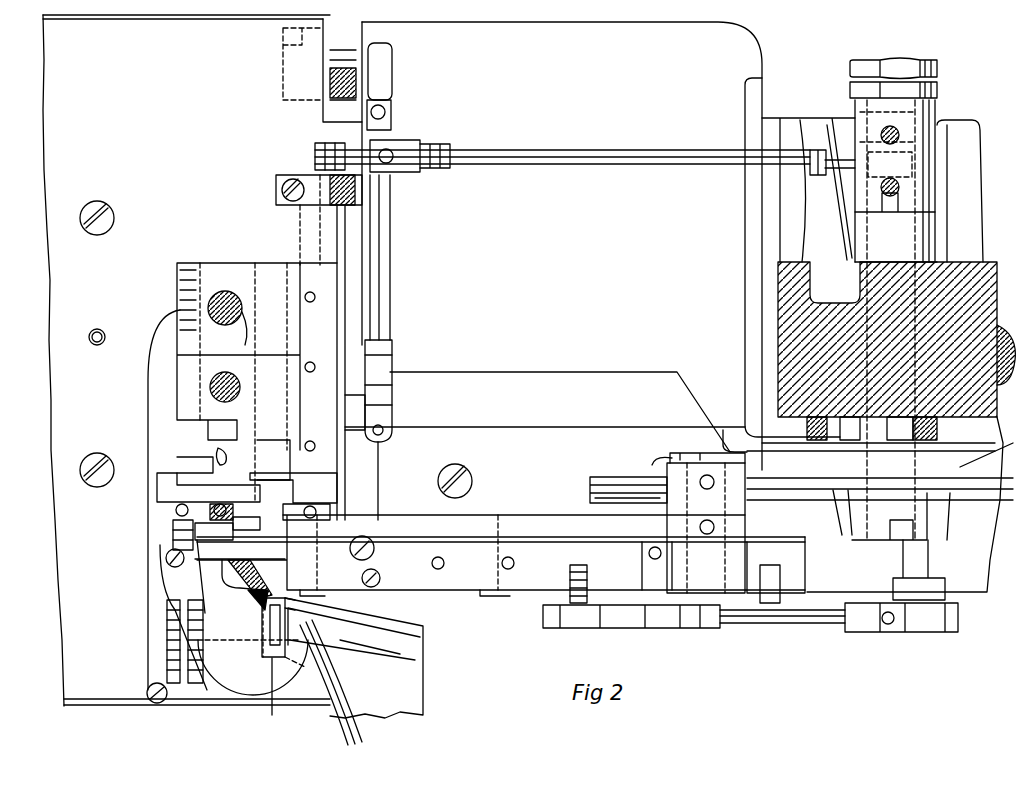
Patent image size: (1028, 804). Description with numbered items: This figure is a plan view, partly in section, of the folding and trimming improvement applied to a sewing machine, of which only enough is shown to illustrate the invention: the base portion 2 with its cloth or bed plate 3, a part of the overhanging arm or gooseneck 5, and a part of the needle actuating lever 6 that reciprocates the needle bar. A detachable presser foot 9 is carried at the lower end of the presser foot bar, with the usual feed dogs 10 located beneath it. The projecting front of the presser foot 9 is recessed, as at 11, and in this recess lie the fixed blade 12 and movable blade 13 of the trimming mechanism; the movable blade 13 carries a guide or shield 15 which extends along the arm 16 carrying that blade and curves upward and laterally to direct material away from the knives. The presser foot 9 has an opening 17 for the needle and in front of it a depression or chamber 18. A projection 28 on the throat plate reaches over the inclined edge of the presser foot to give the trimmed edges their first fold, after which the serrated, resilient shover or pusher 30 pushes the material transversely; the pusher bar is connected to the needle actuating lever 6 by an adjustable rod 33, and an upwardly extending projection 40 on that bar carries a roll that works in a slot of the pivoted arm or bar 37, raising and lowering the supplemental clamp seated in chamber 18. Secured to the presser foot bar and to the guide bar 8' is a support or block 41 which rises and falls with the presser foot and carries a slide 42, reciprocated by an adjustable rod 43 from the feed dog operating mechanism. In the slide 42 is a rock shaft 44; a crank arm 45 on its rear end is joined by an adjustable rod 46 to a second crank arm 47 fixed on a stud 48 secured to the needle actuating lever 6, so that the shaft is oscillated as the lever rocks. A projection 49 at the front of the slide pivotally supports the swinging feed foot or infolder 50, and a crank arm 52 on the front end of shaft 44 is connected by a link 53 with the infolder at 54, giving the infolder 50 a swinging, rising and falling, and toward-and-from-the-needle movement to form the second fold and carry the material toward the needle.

The base portion 2 is at (970, 587).
The cloth or bed plate 3 is at (60, 340).
The overhanging arm or gooseneck 5 is at (583, 40).
The needle actuating lever 6 is at (847, 547).
The guide bar 8' is at (229, 318).
The presser foot 9 is at (255, 710).
The feed dogs 10 is at (197, 684).
The recess 11 is at (272, 660).
The fixed blade 12 is at (268, 620).
The movable blade 13 is at (288, 608).
The guide or shield 15 is at (405, 665).
The arm 16 is at (352, 736).
The opening 17 is at (215, 457).
The depression or chamber 18 is at (180, 540).
The projection 28 is at (236, 585).
The shover or pusher 30 is at (372, 588).
The adjustable rod 33 is at (750, 618).
The pivotally supported arm or bar 37 is at (542, 556).
The upwardly extending projection 40 is at (683, 605).
The support or block 41 is at (180, 262).
The slide 42 is at (360, 248).
The adjustable rod 43 is at (392, 262).
The rock shaft 44 is at (315, 160).
The crank arm 45 is at (276, 186).
The adjustable rod 46 is at (627, 170).
The crank arm 47 is at (858, 140).
The stud 48 is at (937, 545).
The projection 49 is at (305, 489).
The swinging feed foot or infolder 50 is at (157, 490).
The crank arm 52 is at (290, 537).
The link 53 is at (176, 510).
The connection point on infolder 54 is at (183, 520).